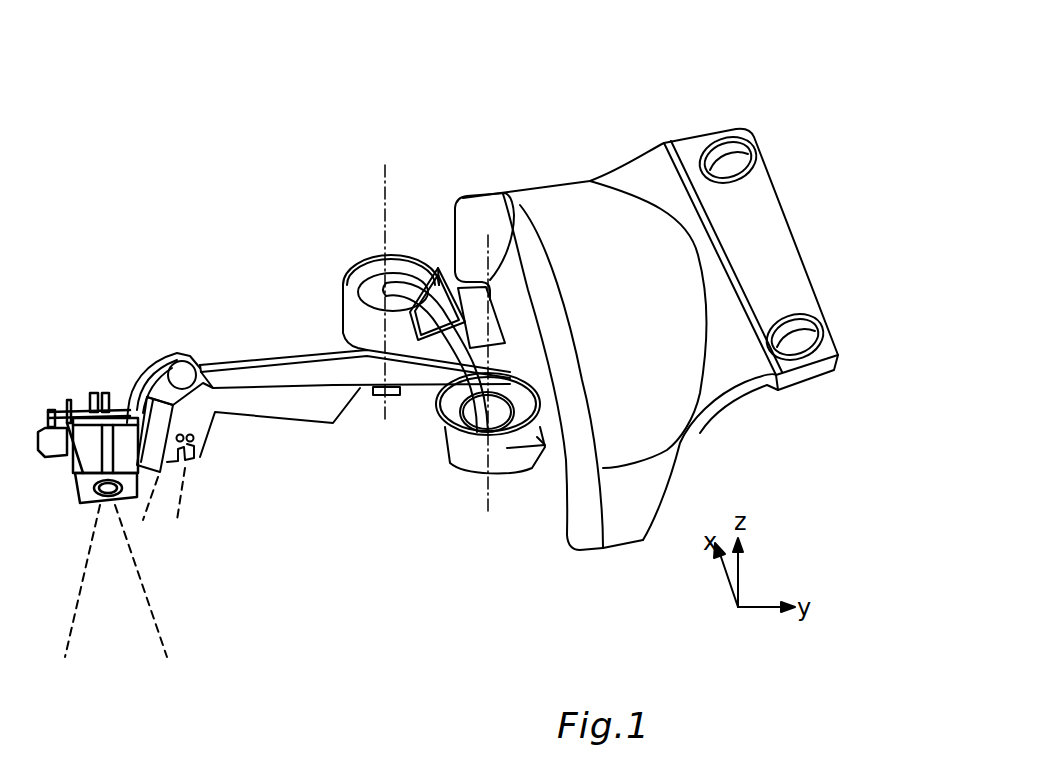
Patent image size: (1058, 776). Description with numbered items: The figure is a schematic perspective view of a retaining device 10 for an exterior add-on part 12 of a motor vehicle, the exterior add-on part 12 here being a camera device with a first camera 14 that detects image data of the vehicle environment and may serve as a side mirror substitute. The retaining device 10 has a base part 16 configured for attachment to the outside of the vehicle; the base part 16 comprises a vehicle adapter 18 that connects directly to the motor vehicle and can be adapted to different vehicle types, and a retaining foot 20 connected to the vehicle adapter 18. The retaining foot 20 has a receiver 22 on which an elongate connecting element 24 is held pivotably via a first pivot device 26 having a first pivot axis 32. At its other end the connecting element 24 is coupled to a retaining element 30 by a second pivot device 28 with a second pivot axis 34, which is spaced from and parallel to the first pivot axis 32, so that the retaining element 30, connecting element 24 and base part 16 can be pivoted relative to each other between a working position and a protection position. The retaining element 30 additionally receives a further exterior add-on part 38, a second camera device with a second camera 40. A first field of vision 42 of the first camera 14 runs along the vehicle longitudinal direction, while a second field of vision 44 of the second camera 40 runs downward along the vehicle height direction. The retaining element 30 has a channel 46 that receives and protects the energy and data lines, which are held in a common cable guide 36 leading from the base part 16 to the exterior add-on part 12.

The retaining device 10 is at (699, 93).
The exterior add-on part 12 is at (83, 457).
The first camera 14 is at (145, 492).
The base part 16 is at (601, 556).
The vehicle adapter 18 is at (672, 412).
The retaining foot 20 is at (560, 511).
The receiver 22 is at (467, 457).
The connecting element 24 is at (458, 390).
The first pivot device 26 is at (510, 371).
The second pivot device 28 is at (393, 241).
The retaining element 30 is at (320, 370).
The first pivot axis 32 is at (508, 197).
The second pivot axis 34 is at (383, 202).
The cable guide 36 is at (453, 280).
The further exterior add-on part 38 is at (160, 353).
The second camera 40 is at (140, 378).
The first field of vision 42 is at (160, 633).
The second field of vision 44 is at (187, 493).
The channel 46 is at (350, 408).